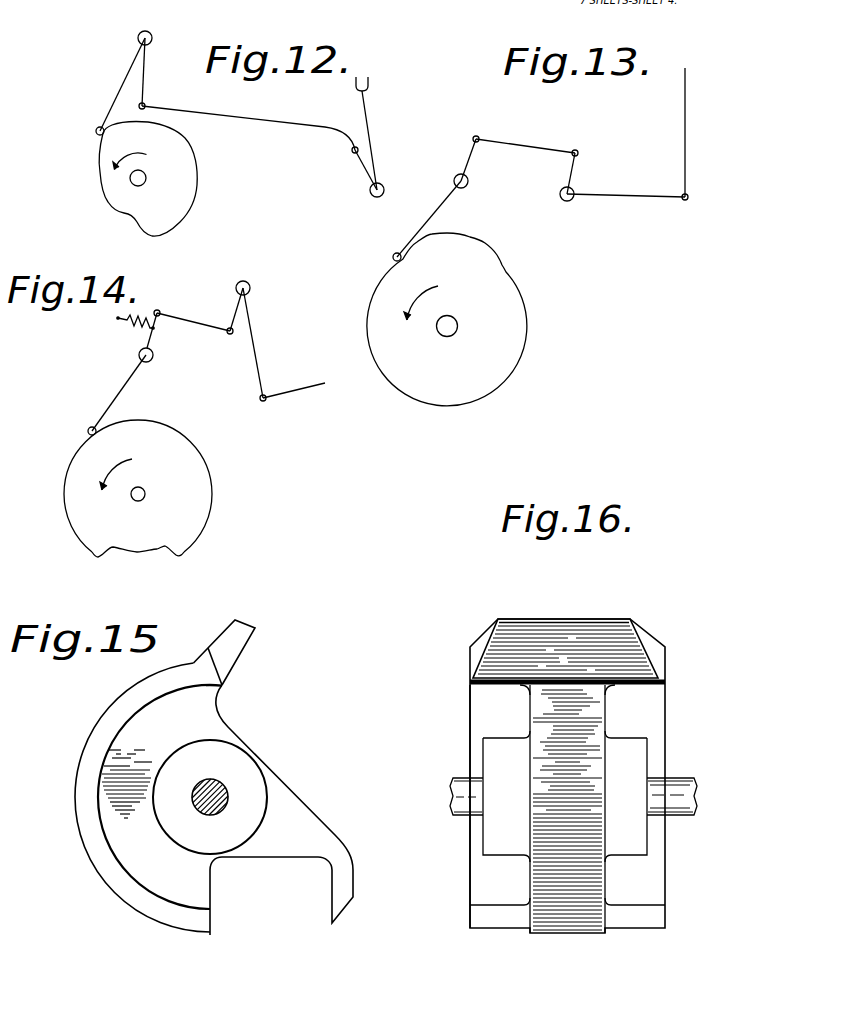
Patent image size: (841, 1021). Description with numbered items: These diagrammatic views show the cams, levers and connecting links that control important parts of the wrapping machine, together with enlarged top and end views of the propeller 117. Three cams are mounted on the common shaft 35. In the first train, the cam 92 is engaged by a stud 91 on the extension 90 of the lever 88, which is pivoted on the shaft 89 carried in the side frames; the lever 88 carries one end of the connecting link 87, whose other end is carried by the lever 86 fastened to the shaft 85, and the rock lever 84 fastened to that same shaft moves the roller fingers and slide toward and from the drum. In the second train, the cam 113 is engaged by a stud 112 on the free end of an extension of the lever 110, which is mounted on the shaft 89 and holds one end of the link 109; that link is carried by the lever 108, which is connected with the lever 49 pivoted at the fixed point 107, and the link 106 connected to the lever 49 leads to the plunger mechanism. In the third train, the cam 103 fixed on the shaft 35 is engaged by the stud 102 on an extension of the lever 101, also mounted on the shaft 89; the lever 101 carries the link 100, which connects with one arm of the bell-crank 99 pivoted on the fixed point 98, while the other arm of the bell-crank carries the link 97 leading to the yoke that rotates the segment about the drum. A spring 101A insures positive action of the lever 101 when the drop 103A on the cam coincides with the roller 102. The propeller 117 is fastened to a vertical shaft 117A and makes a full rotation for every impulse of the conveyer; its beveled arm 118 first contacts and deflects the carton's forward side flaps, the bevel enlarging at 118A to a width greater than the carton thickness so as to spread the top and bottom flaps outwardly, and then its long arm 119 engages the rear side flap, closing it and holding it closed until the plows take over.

In FIG. 12, the shaft 35 is at (133, 183).
In FIG. 13, the shaft 35 is at (453, 334).
In FIG. 14, the shaft 35 is at (146, 494).
In FIG. 13, the lever 49 is at (631, 197).
In FIG. 12, the rock lever 84 is at (370, 121).
In FIG. 12, the shaft 85 is at (382, 184).
In FIG. 12, the lever 86 is at (364, 167).
In FIG. 12, the connecting link 87 is at (268, 121).
In FIG. 12, the lever 88 is at (144, 86).
In FIG. 12, the shaft 89 is at (152, 38).
In FIG. 13, the shaft 89 is at (466, 189).
In FIG. 14, the shaft 89 is at (154, 357).
In FIG. 12, the extension 90 is at (122, 86).
In FIG. 12, the stud 91 is at (95, 131).
In FIG. 12, the cam 92 is at (180, 172).
In FIG. 14, the link 97 is at (290, 392).
In FIG. 14, the fixed point 98 is at (250, 287).
In FIG. 14, the bell-crank 99 is at (257, 342).
In FIG. 14, the link 100 is at (197, 322).
In FIG. 14, the lever 101 is at (119, 397).
In FIG. 14, the spring 101A is at (120, 326).
In FIG. 14, the stud 102 is at (88, 428).
In FIG. 14, the cam 103 is at (213, 492).
In FIG. 14, the drop 103A is at (169, 553).
In FIG. 13, the link 106 is at (686, 171).
In FIG. 13, the fixed point 107 is at (565, 201).
In FIG. 13, the lever 108 is at (573, 175).
In FIG. 13, the link 109 is at (517, 146).
In FIG. 13, the lever 110 is at (468, 160).
In FIG. 13, the stud 112 is at (393, 256).
In FIG. 13, the cam 113 is at (515, 311).
In FIG. 15, the propeller 117 is at (232, 768).
In FIG. 16, the propeller 117 is at (641, 704).
In FIG. 15, the vertical shaft 117A is at (208, 811).
In FIG. 16, the vertical shaft 117A is at (697, 806).
In FIG. 15, the arm 118 is at (242, 633).
In FIG. 16, the arm 118 is at (540, 625).
In FIG. 15, the enlarged bevel 118A is at (100, 857).
In FIG. 16, the enlarged bevel 118A is at (490, 695).
In FIG. 15, the long arm 119 is at (342, 895).